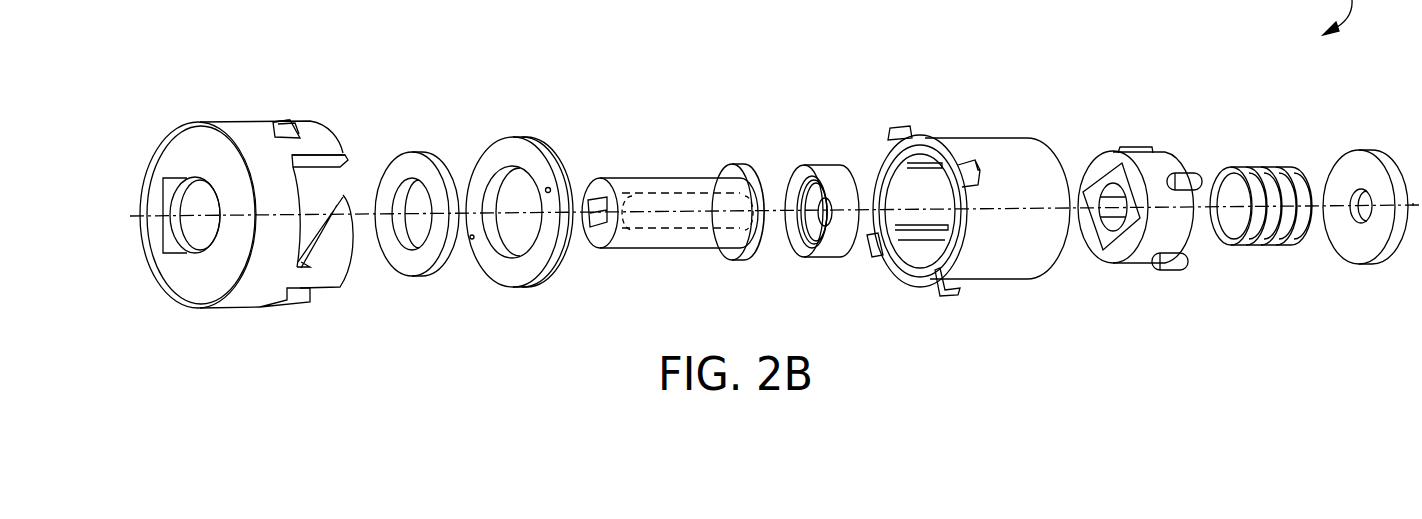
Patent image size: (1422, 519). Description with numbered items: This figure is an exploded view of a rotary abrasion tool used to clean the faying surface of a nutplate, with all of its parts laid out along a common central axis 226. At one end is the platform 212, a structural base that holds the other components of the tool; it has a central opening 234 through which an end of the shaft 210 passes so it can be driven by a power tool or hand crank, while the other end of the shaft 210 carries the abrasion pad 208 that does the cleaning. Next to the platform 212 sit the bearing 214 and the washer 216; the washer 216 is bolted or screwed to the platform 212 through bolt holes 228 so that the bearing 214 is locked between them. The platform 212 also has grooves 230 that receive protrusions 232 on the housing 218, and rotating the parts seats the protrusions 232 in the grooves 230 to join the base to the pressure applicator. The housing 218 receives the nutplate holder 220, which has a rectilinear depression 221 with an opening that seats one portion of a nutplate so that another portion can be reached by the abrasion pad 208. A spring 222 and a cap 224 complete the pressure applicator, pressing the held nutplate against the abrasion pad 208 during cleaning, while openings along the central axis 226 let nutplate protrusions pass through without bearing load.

The abrasion pad 208 is at (837, 175).
The shaft 210 is at (678, 187).
The platform 212 is at (245, 133).
The bearing 214 is at (418, 165).
The washer 216 is at (490, 160).
The housing 218 is at (1002, 155).
The nutplate holder 220 is at (1153, 158).
The rectilinear depression 221 is at (1103, 180).
The spring 222 is at (1277, 170).
The cap 224 is at (1355, 172).
The central axis 226 is at (1413, 203).
The bolt holes 228 is at (550, 187).
The grooves 230 is at (321, 118).
The protrusions 232 is at (892, 130).
The opening 234 is at (163, 217).